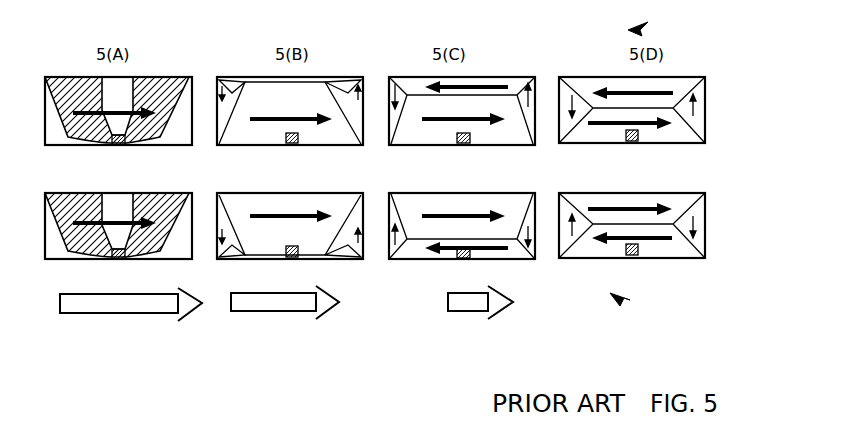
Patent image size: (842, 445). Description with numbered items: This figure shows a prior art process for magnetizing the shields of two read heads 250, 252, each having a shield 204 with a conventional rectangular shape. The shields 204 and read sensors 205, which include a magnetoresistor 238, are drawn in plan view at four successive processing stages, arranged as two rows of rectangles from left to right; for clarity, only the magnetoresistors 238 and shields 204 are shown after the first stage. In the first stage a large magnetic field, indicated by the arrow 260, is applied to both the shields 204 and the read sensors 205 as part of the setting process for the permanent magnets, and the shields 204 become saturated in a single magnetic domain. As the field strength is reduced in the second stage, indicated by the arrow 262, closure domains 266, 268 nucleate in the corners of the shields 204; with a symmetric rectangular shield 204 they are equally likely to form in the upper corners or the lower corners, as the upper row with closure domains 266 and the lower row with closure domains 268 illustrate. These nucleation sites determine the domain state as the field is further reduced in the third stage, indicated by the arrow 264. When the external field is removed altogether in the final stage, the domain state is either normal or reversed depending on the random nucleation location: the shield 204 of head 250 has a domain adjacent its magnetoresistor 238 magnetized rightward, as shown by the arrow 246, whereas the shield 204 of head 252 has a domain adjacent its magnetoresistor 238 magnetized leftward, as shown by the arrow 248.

The shield 204 is at (607, 77).
The read sensor 205 is at (92, 145).
The magnetoresistor 238 is at (634, 141).
The arrow indicating rightward (normal) magnetization 246 is at (662, 125).
The arrow indicating leftward (reversed) magnetization 248 is at (607, 240).
The head 250 is at (638, 26).
The head 252 is at (618, 301).
The magnetic field arrow 260 is at (146, 304).
The reduced field arrow 262 is at (290, 304).
The further reduced field arrow 264 is at (468, 300).
The closure domain 266 is at (228, 92).
The closure domain 268 is at (240, 256).